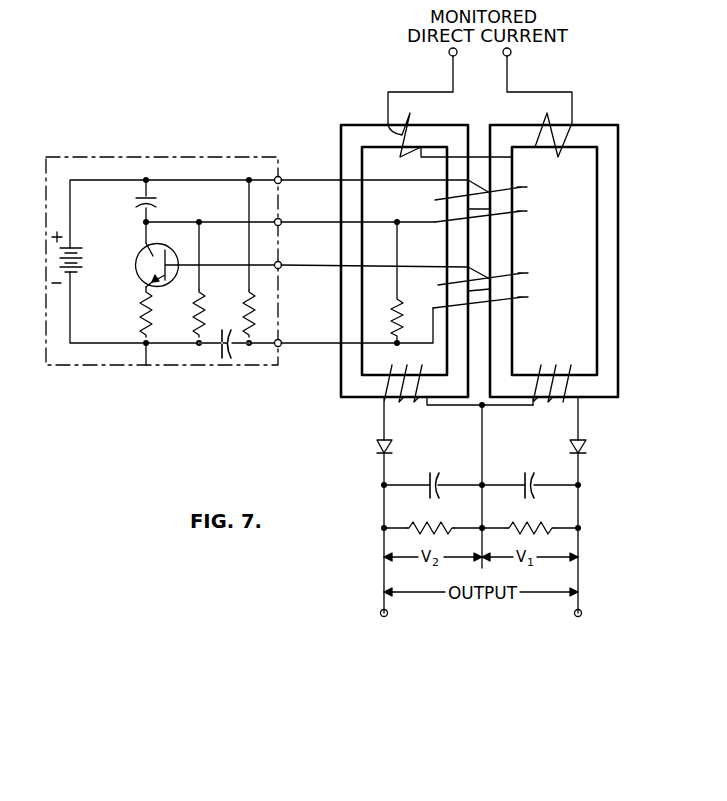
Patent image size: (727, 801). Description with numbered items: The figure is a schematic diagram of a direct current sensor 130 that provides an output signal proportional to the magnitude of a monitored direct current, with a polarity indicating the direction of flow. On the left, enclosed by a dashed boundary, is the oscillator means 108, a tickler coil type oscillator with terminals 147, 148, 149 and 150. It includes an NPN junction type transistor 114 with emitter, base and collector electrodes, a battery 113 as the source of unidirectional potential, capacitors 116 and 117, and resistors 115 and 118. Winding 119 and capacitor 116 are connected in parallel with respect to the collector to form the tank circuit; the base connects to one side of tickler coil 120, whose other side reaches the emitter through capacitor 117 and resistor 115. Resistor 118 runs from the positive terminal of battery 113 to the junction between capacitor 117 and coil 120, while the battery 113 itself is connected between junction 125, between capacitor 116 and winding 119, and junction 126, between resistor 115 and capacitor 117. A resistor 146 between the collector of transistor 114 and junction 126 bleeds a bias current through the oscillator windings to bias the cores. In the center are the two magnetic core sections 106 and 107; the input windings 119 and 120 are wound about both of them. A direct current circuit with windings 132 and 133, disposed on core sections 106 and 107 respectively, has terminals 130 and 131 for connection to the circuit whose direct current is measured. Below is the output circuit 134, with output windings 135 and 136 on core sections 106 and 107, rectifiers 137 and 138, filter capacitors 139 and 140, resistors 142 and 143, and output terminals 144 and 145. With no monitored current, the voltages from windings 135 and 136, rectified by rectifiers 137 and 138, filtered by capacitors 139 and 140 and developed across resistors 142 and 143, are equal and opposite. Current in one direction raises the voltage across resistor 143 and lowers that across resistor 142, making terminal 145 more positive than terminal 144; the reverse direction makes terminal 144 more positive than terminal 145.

The magnetic core section 106 is at (450, 132).
The magnetic core section 107 is at (510, 132).
The oscillator means 108 is at (177, 157).
The battery 113 is at (82, 263).
The NPN junction type transistor 114 is at (137, 263).
The resistor 115 is at (141, 316).
The capacitor 116 is at (136, 198).
The capacitor 117 is at (229, 358).
The resistor 118 is at (245, 306).
The input coil (winding) 119 is at (435, 200).
The tickler coil 120 is at (438, 286).
The junction 125 is at (146, 180).
The junction 126 is at (140, 381).
The direct current sensor 130 is at (449, 55).
The terminal 131 is at (511, 55).
The direct current winding 132 is at (394, 131).
The direct current winding 133 is at (571, 130).
The output circuit 134 is at (473, 440).
The output winding 135 is at (413, 404).
The output winding 136 is at (561, 404).
The rectifier 137 is at (394, 447).
The rectifier 138 is at (589, 447).
The capacitor 139 is at (440, 473).
The capacitor 140 is at (535, 473).
The resistor 142 is at (430, 522).
The resistor 143 is at (531, 522).
The output terminal 144 is at (382, 617).
The output terminal 145 is at (581, 616).
The resistor 146 is at (195, 312).
The terminal 147 is at (281, 177).
The terminal 148 is at (281, 219).
The terminal 149 is at (281, 262).
The terminal 150 is at (281, 340).